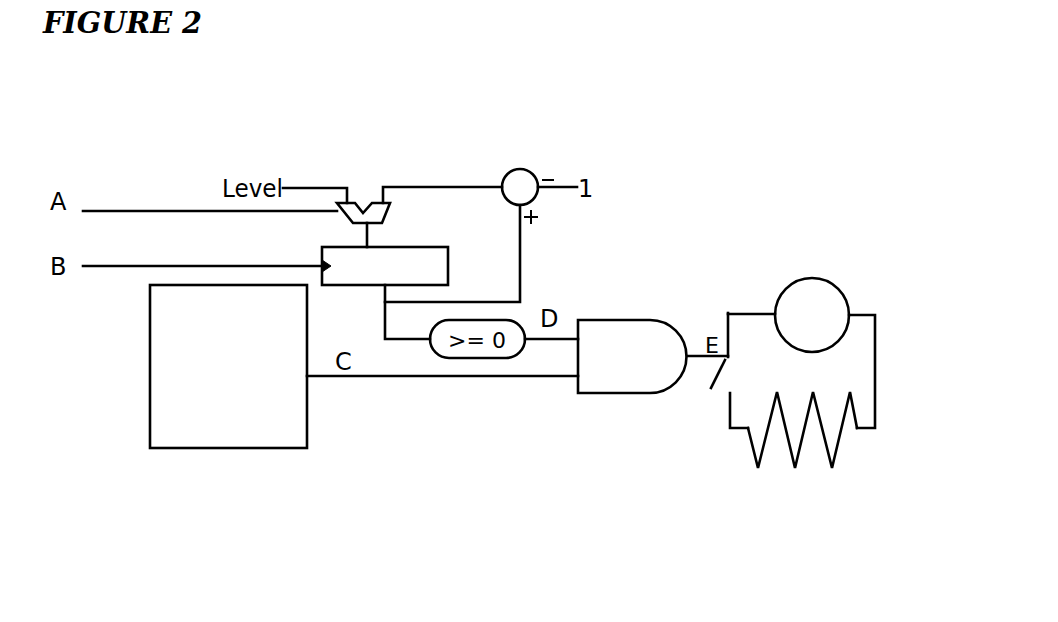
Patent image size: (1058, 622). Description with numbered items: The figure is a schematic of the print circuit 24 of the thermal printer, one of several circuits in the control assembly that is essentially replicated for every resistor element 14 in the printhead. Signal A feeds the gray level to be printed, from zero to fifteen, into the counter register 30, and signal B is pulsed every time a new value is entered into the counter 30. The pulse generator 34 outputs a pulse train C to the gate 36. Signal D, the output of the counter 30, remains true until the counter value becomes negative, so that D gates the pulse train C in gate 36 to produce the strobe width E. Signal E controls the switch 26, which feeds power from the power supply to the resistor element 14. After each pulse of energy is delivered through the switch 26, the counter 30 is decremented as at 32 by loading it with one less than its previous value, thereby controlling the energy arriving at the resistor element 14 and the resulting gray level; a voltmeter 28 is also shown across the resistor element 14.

The resistor element 14 is at (785, 472).
The print circuit 24 is at (693, 197).
The switch 26 is at (722, 390).
The voltmeter 28 is at (798, 279).
The counter register 30 is at (385, 253).
The decrementer 32 is at (535, 162).
The pulse generator 34 is at (268, 435).
The gate 36 is at (603, 382).